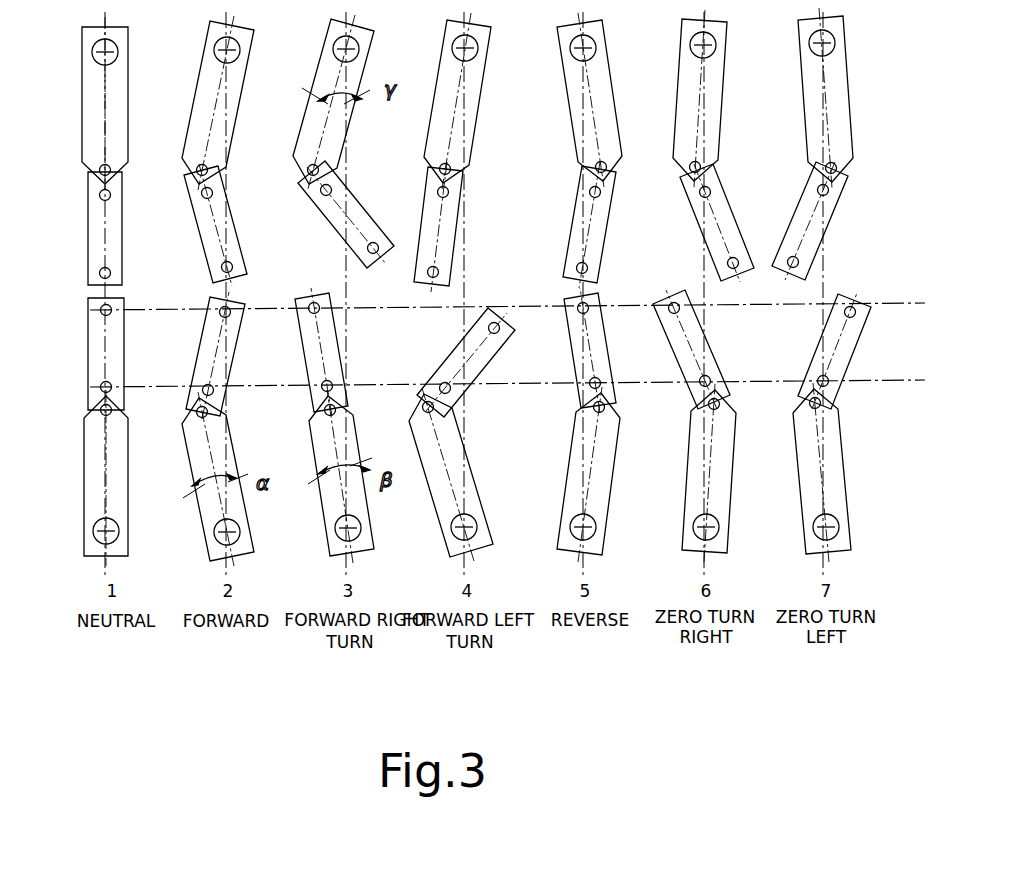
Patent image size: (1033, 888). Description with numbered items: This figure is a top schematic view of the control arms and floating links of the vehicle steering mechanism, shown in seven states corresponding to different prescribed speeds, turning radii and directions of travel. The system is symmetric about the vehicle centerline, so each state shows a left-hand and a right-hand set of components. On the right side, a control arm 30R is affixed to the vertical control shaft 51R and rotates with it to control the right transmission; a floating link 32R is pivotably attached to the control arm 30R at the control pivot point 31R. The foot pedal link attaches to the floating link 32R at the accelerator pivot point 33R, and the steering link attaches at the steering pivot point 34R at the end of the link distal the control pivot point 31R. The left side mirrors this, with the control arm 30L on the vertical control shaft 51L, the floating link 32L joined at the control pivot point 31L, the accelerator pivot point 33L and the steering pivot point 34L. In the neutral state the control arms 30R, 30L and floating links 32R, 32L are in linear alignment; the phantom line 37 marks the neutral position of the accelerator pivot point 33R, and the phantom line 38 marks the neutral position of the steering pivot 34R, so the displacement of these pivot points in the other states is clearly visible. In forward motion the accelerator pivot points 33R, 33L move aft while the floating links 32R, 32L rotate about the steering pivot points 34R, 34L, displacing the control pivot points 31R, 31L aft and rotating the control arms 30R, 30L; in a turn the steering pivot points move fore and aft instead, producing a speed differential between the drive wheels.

The vertical control shaft 51L is at (92, 54).
The control arm 30L is at (86, 118).
The control pivot point 31L is at (99, 170).
The accelerator pivot point 33L is at (99, 195).
The floating link 32L is at (88, 241).
The steering pivot point 34L is at (99, 273).
The steering pivot point 34R is at (100, 311).
The floating link 32R is at (88, 356).
The accelerator pivot point 33R is at (100, 387).
The control pivot point 31R is at (100, 411).
The control arm 30R is at (86, 483).
The vertical control shaft 51R is at (94, 534).
The phantom line 37 is at (913, 378).
The phantom line 38 is at (913, 305).